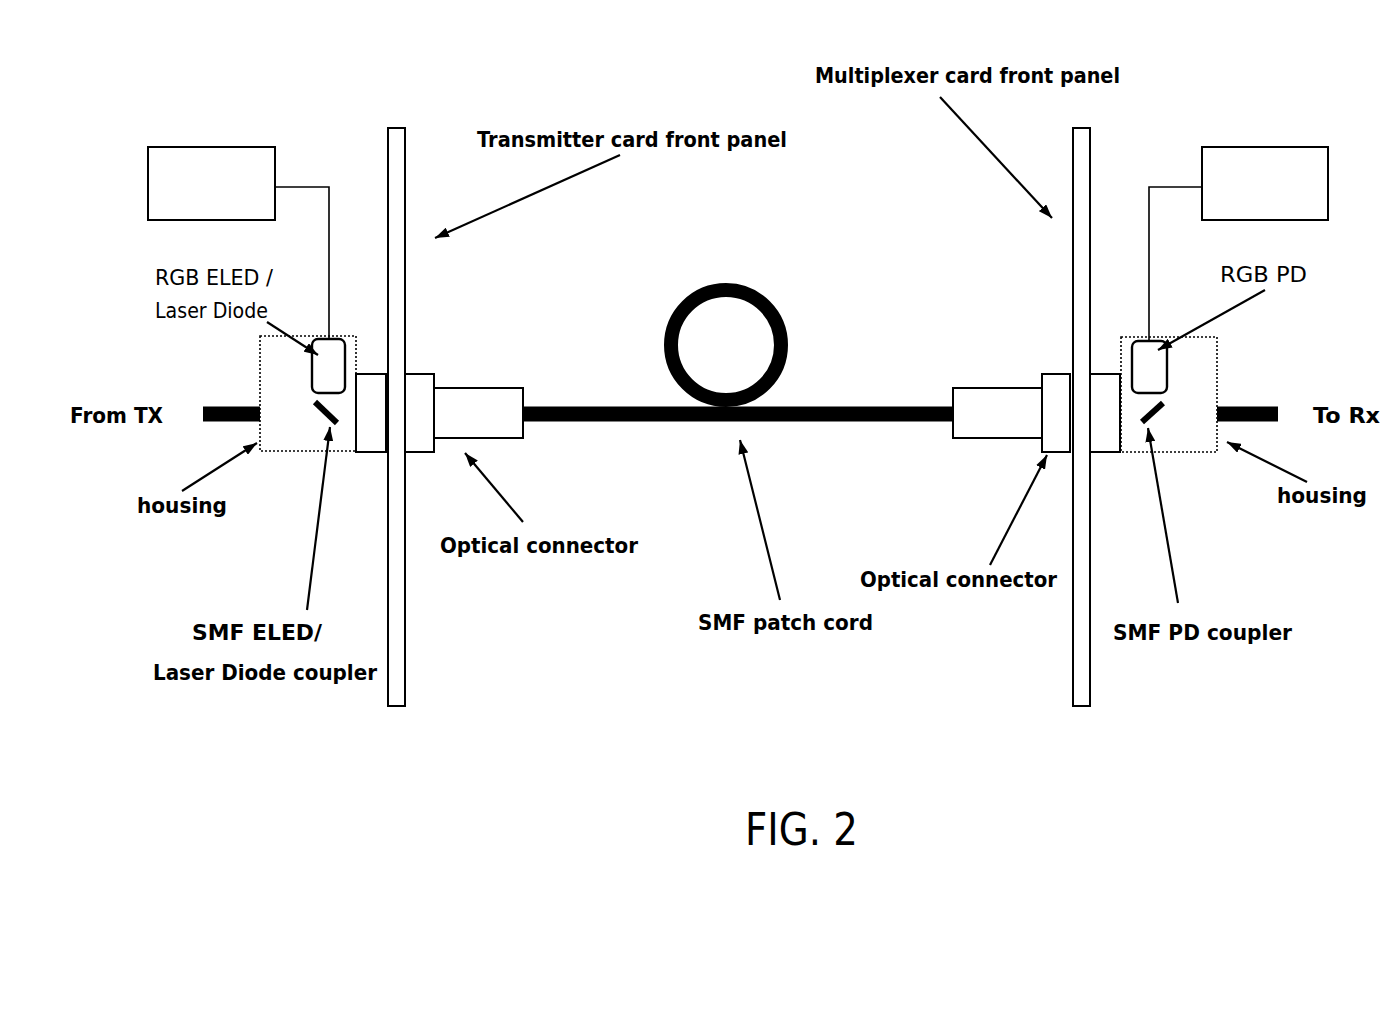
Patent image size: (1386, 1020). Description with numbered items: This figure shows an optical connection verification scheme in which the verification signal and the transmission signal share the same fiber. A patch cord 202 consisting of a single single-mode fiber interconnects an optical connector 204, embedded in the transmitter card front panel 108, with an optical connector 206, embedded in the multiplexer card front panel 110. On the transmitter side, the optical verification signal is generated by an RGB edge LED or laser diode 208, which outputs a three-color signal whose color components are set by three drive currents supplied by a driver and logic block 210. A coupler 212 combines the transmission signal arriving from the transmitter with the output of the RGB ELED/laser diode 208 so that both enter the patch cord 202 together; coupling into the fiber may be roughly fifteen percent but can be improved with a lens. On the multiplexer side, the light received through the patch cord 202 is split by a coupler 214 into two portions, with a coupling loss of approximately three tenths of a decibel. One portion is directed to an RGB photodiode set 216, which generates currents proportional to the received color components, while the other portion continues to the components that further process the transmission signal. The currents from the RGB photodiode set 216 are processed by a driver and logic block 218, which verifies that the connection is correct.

The transmitter card front panel 108 is at (405, 180).
The multiplexer card front panel 110 is at (1090, 138).
The patch cord 202 is at (798, 407).
The optical connector 204 is at (420, 382).
The optical connector 206 is at (1067, 380).
The RGB ELED/laser diode 208 is at (338, 352).
The driver and logic block 210 is at (265, 152).
The coupler 212 is at (315, 415).
The coupler 214 is at (1162, 410).
The RGB photodiode set 216 is at (1153, 352).
The driver and logic block 218 is at (1303, 153).